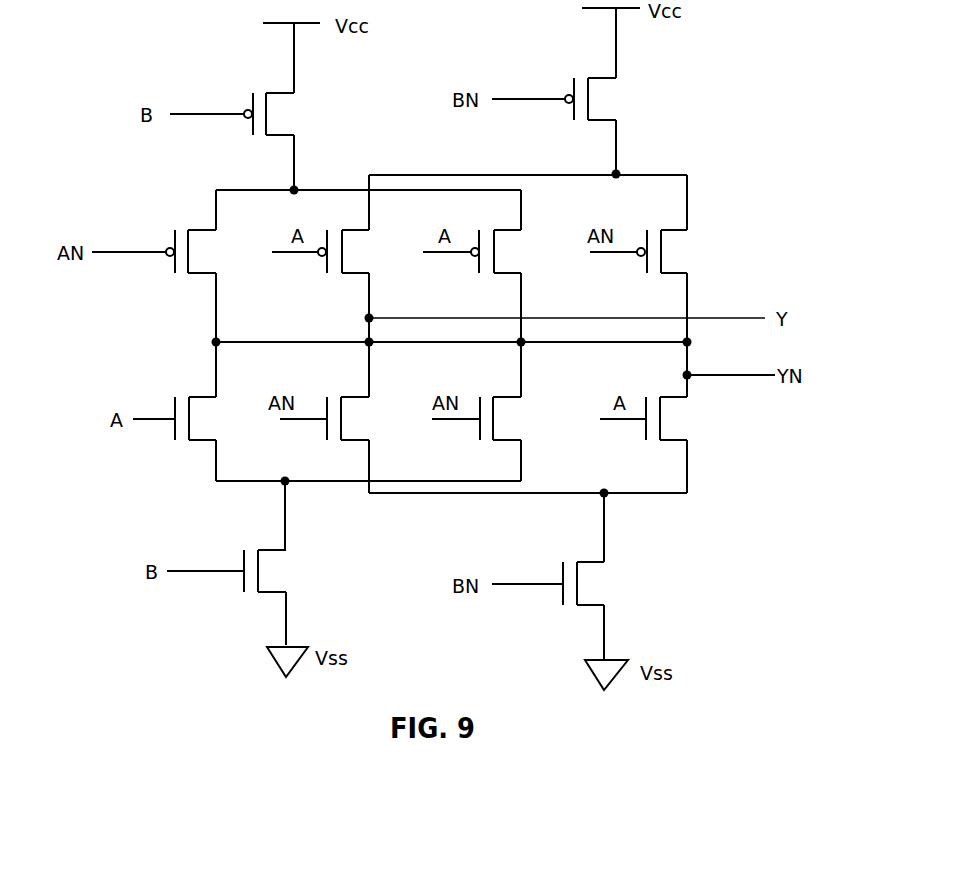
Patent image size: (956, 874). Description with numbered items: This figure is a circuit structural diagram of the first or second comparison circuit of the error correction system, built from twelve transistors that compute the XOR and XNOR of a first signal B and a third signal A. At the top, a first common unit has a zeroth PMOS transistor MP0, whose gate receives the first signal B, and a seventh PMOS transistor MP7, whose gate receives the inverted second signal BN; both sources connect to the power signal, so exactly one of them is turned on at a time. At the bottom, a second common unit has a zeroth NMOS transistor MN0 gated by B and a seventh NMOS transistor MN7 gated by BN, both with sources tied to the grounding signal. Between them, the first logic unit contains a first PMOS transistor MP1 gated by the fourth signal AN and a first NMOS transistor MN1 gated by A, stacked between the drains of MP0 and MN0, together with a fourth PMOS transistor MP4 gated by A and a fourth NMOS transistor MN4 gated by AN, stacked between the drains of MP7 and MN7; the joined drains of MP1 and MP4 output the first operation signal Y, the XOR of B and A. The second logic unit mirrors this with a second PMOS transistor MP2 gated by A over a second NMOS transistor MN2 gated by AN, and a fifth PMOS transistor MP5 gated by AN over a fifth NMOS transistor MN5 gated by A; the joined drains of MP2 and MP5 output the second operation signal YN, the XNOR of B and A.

The zeroth PMOS transistor MP0 is at (247, 114).
The seventh PMOS transistor MP7 is at (578, 99).
The first PMOS transistor MP1 is at (167, 251).
The fourth PMOS transistor MP4 is at (333, 251).
The second PMOS transistor MP2 is at (488, 251).
The fifth PMOS transistor MP5 is at (656, 251).
The first NMOS transistor MN1 is at (188, 418).
The fourth NMOS transistor MN4 is at (339, 418).
The second NMOS transistor MN2 is at (494, 418).
The fifth NMOS transistor MN5 is at (663, 418).
The zeroth NMOS transistor MN0 is at (245, 571).
The seventh NMOS transistor MN7 is at (567, 583).